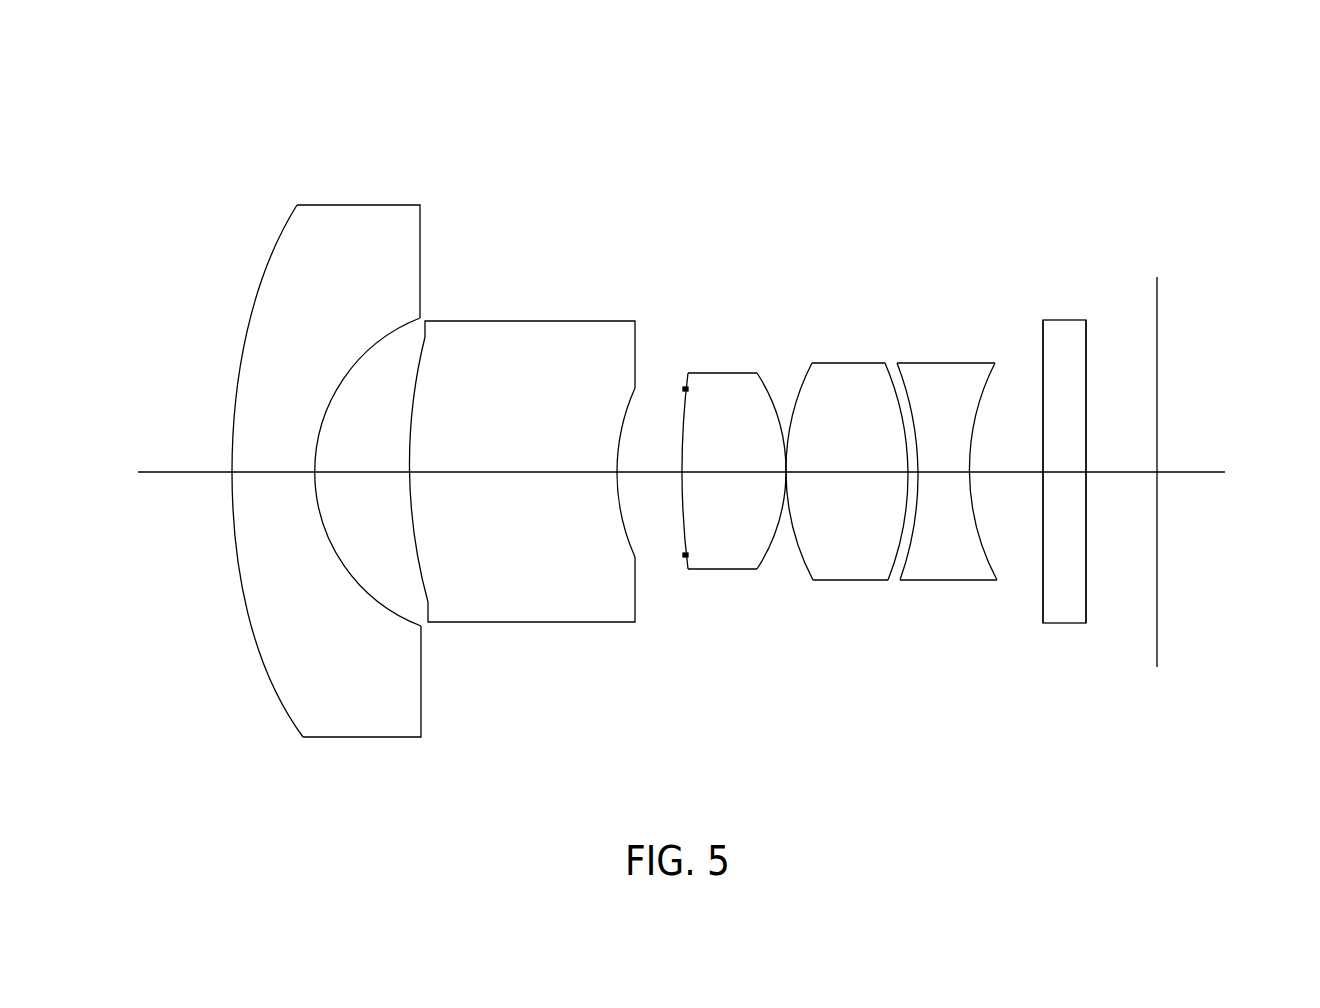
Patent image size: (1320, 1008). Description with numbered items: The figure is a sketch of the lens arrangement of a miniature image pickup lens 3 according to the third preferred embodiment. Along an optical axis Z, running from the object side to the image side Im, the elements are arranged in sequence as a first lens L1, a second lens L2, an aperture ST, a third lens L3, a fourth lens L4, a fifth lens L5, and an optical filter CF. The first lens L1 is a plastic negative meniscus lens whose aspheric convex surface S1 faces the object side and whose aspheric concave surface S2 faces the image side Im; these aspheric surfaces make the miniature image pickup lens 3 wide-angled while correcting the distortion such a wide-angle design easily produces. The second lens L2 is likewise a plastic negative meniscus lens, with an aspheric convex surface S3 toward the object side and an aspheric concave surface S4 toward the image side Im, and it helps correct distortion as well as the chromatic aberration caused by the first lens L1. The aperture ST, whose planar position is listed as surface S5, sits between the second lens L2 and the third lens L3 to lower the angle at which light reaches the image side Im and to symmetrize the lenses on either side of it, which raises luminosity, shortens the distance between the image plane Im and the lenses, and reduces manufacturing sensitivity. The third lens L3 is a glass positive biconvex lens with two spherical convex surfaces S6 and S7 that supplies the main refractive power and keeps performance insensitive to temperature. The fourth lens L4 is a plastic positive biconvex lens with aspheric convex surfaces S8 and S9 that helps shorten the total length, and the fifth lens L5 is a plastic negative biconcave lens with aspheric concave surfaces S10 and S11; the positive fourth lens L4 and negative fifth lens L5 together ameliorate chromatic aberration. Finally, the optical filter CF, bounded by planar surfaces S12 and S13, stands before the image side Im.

The miniature image pickup lens 3 is at (1133, 143).
The optical axis Z is at (163, 472).
The first lens L1 is at (314, 455).
The second lens L2 is at (522, 484).
The third lens L3 is at (722, 501).
The fourth lens L4 is at (833, 452).
The fifth lens L5 is at (917, 487).
The aperture ST is at (684, 389).
The optical filter CF is at (1075, 487).
The image side Im is at (1157, 567).
The convex surface S1 is at (262, 660).
The concave surface S2 is at (378, 598).
The convex surface S3 is at (409, 499).
The concave surface S4 is at (617, 507).
The aperture surface S5 is at (687, 555).
The spherical convex surface S6 is at (683, 492).
The spherical convex surface S7 is at (773, 547).
The aspheric convex surface S8 is at (797, 558).
The aspheric convex surface S9 is at (895, 557).
The aspheric concave surface S10 is at (910, 542).
The aspheric concave surface S11 is at (980, 533).
The filter surface S12 is at (1043, 590).
The filter surface S13 is at (1087, 575).